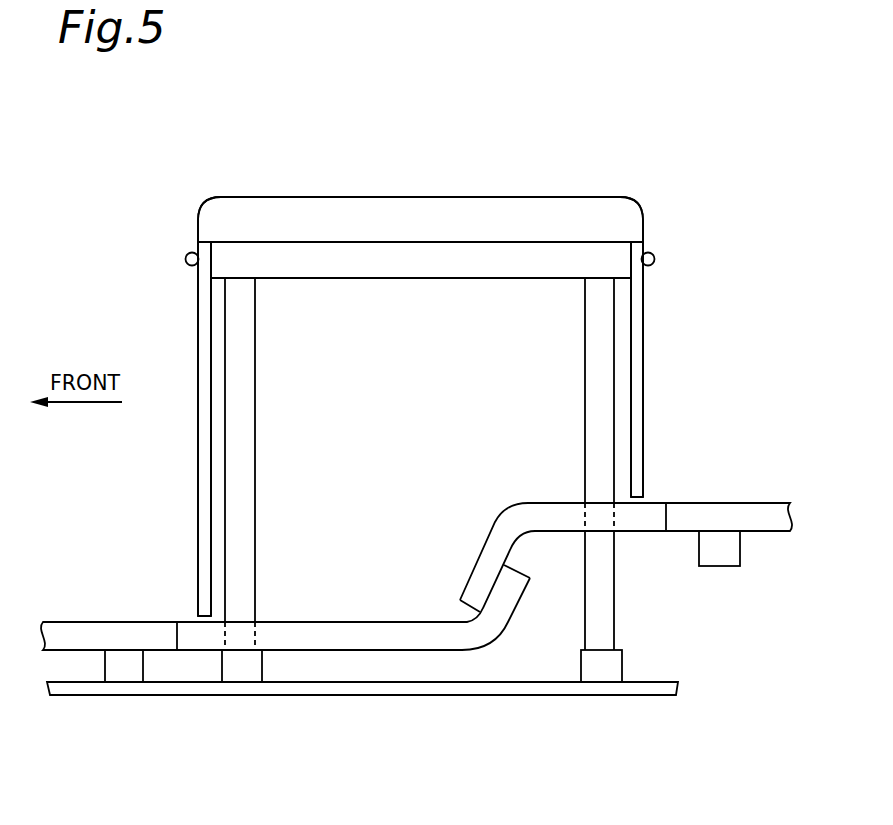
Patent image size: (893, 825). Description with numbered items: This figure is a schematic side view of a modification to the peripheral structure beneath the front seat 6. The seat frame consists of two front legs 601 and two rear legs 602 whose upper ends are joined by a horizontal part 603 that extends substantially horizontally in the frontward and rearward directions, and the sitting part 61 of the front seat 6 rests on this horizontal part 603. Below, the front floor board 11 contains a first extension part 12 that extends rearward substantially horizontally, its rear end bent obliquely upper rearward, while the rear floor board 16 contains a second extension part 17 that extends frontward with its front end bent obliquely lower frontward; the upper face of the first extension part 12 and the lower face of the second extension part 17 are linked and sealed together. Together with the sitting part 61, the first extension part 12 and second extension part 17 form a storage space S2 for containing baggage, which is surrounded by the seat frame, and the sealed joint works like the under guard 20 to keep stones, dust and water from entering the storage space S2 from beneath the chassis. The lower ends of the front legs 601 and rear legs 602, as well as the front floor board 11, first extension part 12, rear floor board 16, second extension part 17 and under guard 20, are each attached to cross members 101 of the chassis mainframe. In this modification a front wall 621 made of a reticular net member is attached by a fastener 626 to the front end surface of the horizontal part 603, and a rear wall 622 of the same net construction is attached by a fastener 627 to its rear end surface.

The front seat 6 is at (197, 186).
The sitting part 61 is at (452, 210).
The front legs 601 is at (242, 310).
The rear legs 602 is at (595, 320).
The horizontal part 603 is at (508, 260).
The storage space S2 is at (372, 310).
The front wall 621 is at (204, 457).
The rear wall 622 is at (636, 377).
The fastener 626 is at (188, 254).
The fastener 627 is at (652, 257).
The front floor board 11 is at (100, 632).
The first extension part 12 is at (380, 635).
The rear floor board 16 is at (734, 504).
The second extension part 17 is at (557, 515).
The under guard 20 is at (77, 690).
The cross members 101 is at (125, 670).